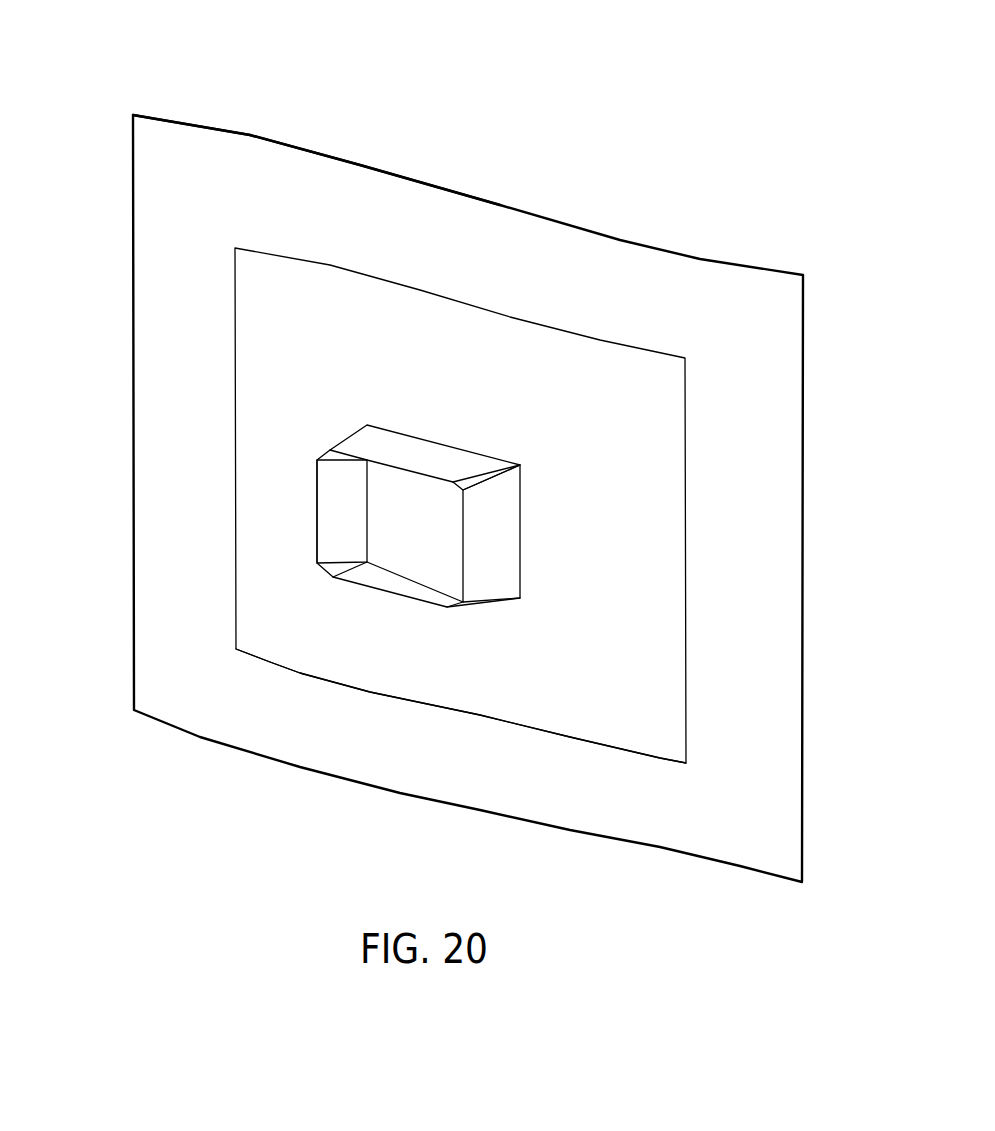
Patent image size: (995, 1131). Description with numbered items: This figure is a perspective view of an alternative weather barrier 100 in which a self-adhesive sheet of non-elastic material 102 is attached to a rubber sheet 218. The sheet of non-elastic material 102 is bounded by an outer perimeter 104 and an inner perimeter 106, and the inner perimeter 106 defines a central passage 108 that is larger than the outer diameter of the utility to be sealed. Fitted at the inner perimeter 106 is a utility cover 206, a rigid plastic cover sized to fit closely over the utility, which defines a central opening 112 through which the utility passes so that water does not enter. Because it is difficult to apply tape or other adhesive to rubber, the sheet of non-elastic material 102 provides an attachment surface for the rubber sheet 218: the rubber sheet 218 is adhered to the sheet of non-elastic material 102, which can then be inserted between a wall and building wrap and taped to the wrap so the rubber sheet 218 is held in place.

The weather barrier 100 is at (468, 498).
The sheet of non-elastic material 102 is at (550, 505).
The outer perimeter 104 is at (561, 644).
The inner perimeter 106 is at (660, 506).
The central passage 108 is at (277, 408).
The central opening 112 is at (254, 531).
The utility cover 206 is at (240, 505).
The rubber sheet 218 is at (279, 109).